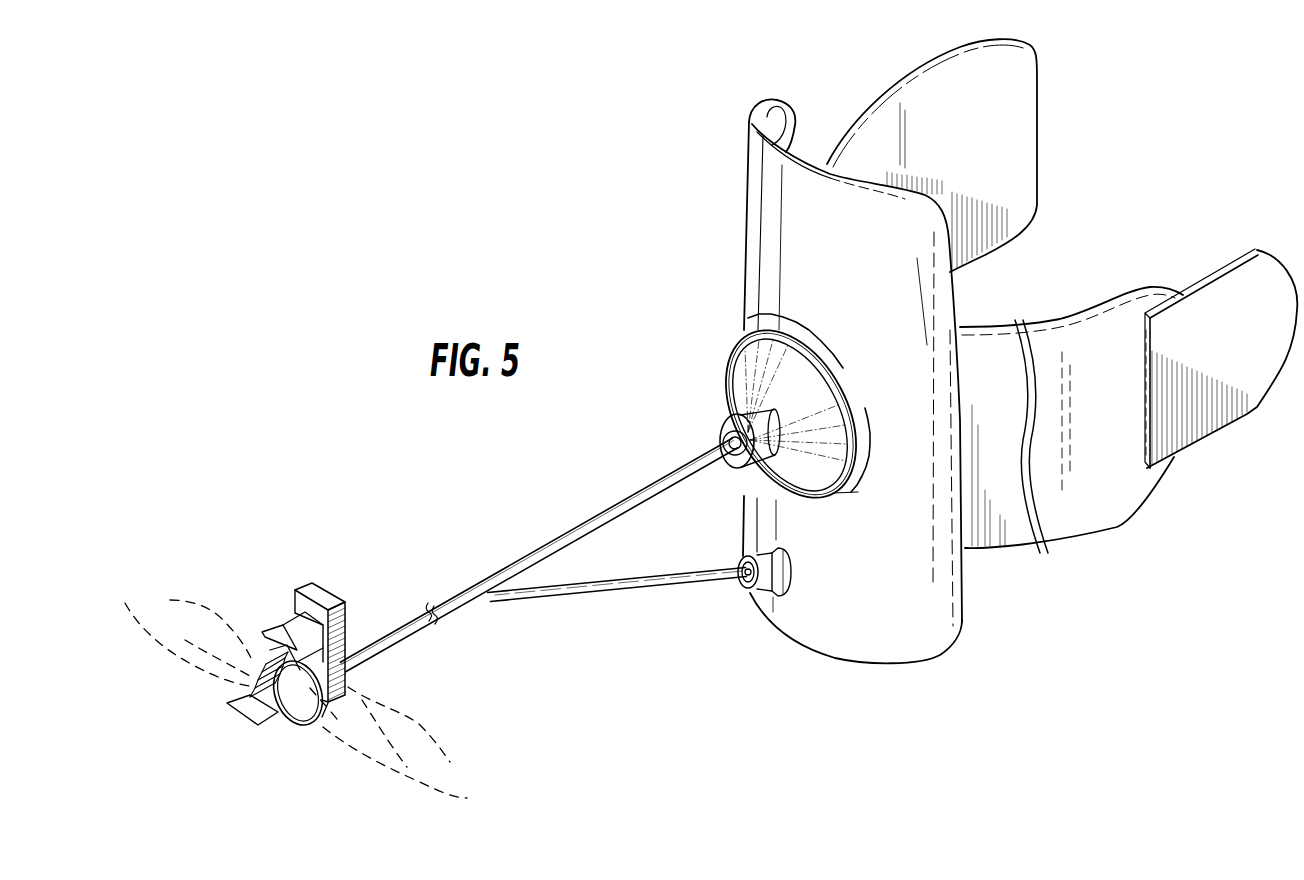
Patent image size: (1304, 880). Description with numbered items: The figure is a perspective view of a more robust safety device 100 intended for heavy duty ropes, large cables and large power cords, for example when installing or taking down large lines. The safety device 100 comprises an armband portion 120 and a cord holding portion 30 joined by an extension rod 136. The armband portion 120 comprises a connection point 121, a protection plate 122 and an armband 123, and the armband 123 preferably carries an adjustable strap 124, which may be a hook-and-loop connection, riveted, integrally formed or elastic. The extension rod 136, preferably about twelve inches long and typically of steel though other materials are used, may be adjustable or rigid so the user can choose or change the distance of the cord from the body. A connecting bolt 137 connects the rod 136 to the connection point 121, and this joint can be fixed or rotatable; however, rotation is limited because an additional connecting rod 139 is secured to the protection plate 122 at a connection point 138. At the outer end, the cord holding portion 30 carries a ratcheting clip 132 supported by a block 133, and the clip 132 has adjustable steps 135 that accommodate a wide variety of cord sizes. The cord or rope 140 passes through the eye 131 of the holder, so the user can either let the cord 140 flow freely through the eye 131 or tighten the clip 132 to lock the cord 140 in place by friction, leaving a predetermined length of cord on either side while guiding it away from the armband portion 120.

The safety device 100 is at (722, 82).
The armband portion 120 is at (948, 646).
The connection point 121 is at (733, 378).
The protection plate 122 is at (958, 304).
The armband 123 is at (1034, 45).
The adjustable strap 124 is at (1290, 268).
The clamp assembly 30 is at (221, 748).
The eye 131 is at (298, 695).
The ratcheting clip 132 is at (264, 629).
The block 133 is at (345, 602).
The adjustable steps 135 is at (227, 693).
The extension rod 136 is at (398, 652).
The connecting bolt 137 is at (722, 428).
The connection point 138 is at (759, 597).
The connecting rod 139 is at (603, 592).
The cord or rope 140 is at (383, 760).